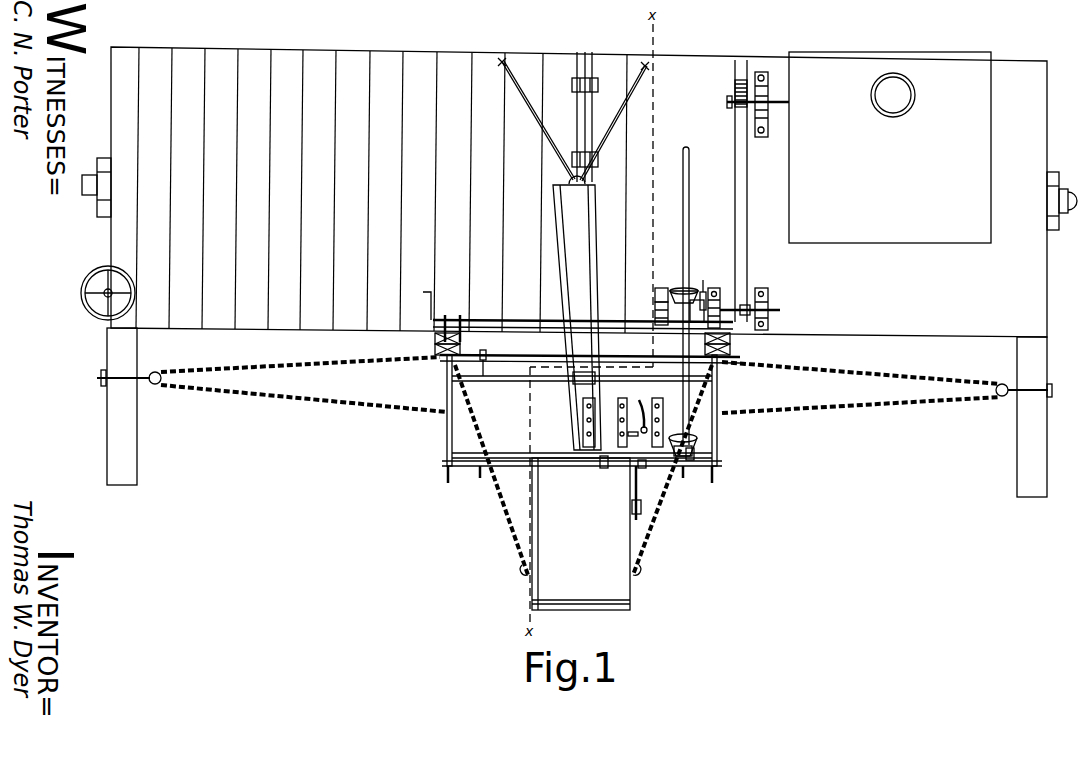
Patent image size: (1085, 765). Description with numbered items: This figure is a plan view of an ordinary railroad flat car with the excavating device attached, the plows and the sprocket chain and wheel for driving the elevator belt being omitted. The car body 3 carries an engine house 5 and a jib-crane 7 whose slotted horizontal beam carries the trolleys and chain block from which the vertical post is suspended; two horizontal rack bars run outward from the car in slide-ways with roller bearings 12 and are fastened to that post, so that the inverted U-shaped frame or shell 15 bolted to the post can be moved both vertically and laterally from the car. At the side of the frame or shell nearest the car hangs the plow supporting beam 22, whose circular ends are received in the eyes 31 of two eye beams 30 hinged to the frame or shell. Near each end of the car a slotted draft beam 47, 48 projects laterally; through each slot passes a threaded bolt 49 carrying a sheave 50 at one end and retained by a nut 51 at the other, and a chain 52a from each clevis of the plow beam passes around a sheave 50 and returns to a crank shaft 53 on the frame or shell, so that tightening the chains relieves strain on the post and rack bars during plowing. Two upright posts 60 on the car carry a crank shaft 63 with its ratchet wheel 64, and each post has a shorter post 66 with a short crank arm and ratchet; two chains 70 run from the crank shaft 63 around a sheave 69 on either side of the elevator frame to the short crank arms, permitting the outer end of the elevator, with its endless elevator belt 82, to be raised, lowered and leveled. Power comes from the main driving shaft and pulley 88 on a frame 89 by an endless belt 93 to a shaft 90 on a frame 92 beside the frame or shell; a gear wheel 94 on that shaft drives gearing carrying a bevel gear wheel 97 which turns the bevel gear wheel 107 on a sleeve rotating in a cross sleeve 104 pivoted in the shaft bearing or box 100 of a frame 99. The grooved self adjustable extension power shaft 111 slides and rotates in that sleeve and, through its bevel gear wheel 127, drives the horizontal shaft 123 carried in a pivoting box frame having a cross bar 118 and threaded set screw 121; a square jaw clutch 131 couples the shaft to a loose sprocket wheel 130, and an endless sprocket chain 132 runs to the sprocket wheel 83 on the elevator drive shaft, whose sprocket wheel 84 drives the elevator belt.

The car body 3 is at (343, 50).
The engine house 5 is at (889, 52).
The jib-crane 7 is at (577, 317).
The roller bearings 12 is at (572, 85).
The frame or shell 15 is at (582, 410).
The plow supporting beam 22 is at (590, 349).
The eye beams 30 is at (582, 482).
The eyes 31 is at (483, 354).
The draft beam 47 is at (137, 474).
The draft beam 48 is at (1017, 466).
The threaded bolt 49 is at (97, 378).
The sheave 50 is at (155, 372).
The nut 51 is at (103, 370).
The chain 52a is at (770, 368).
The crank shaft 53 is at (586, 482).
The upright posts 60 is at (760, 351).
The crank shaft 63 is at (522, 320).
The ratchet wheel 64 is at (432, 315).
The shorter post 66 is at (760, 338).
The sheave 69 is at (524, 568).
The chains 70 is at (508, 522).
The endless elevator belt 82 is at (581, 534).
The sprocket wheel 83 is at (639, 517).
The sprocket wheel 84 is at (638, 494).
The main driving shaft and pulley 88 is at (727, 102).
The frame 89 is at (768, 77).
The shaft 90 is at (768, 310).
The frame 92 is at (768, 292).
The endless belt 93 is at (747, 207).
The gear wheel 94 is at (714, 288).
The bevel gear wheel 97 is at (703, 292).
The frame 99 is at (655, 292).
The shaft bearing or box 100 is at (655, 307).
The cross sleeve 104 is at (672, 332).
The bevel gear wheel 107 is at (676, 289).
The self adjustable extension power shaft 111 is at (689, 195).
The cross bar 118 is at (690, 460).
The threaded set screw 121 is at (681, 434).
The horizontal shaft 123 is at (604, 468).
The bevel gear wheel 127 is at (700, 438).
The loose sprocket wheel 130 is at (630, 434).
The square jaw clutch 131 is at (642, 400).
The endless sprocket chain 132 is at (653, 471).